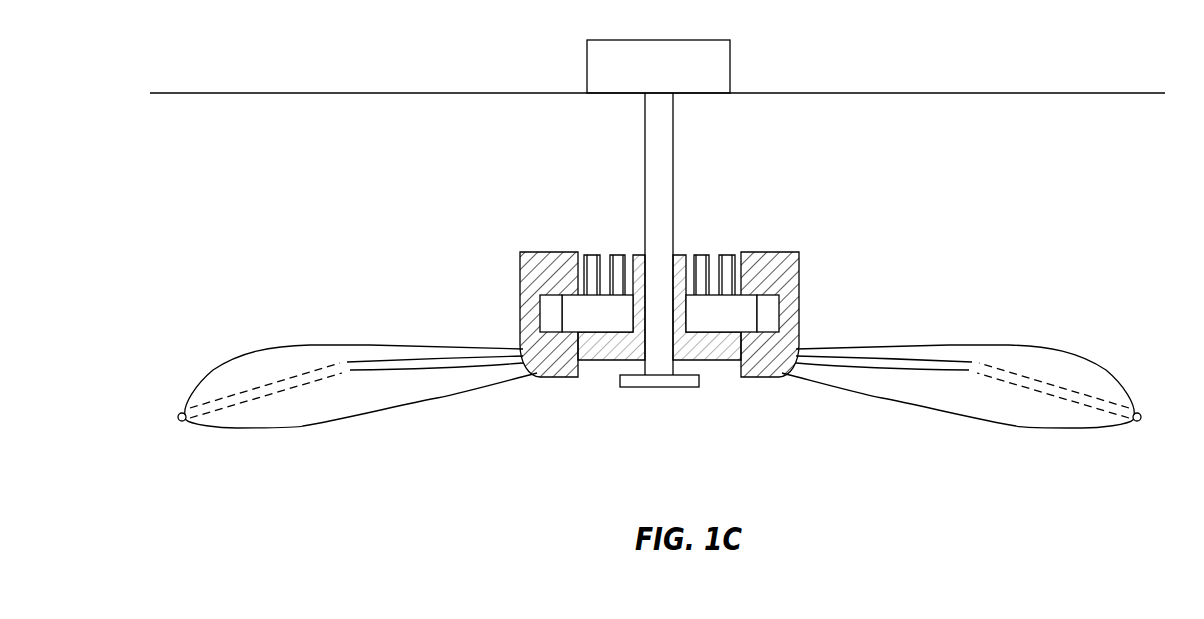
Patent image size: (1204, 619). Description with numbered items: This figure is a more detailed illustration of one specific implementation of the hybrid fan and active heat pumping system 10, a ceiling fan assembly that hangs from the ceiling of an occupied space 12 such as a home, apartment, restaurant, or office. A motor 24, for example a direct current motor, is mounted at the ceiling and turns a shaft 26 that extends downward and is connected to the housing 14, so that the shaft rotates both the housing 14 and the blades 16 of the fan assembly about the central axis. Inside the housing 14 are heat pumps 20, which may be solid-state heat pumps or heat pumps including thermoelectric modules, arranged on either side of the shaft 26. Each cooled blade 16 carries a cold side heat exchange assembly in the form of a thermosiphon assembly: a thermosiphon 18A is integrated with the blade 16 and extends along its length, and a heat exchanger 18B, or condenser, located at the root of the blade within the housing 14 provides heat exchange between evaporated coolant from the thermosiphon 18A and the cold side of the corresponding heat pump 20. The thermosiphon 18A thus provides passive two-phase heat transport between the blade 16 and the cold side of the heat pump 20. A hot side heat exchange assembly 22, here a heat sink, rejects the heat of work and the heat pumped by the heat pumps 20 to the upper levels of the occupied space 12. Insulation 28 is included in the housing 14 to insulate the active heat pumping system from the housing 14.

The hybrid fan and active heat pumping system 10 is at (940, 162).
The occupied space 12 is at (1087, 108).
The housing 14 is at (800, 332).
The blades 16 is at (368, 407).
The thermosiphon 18A is at (327, 368).
The heat exchanger 18B is at (553, 317).
The heat pump 20 is at (568, 307).
The hot side heat exchange assembly 22 is at (716, 266).
The motor 24 is at (670, 78).
The shaft 26 is at (678, 158).
The insulation 28 is at (543, 270).